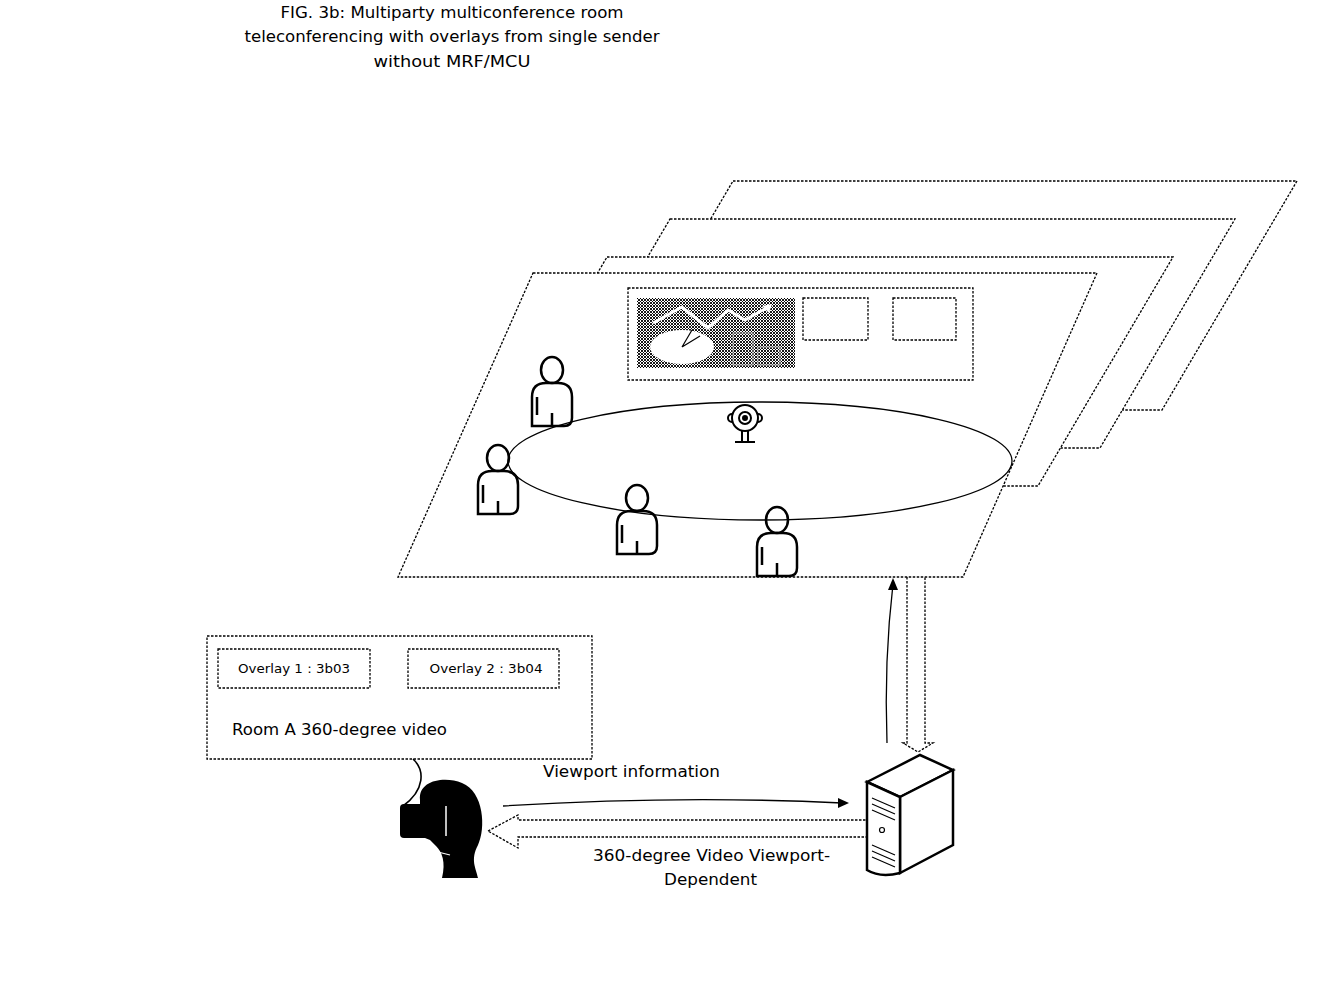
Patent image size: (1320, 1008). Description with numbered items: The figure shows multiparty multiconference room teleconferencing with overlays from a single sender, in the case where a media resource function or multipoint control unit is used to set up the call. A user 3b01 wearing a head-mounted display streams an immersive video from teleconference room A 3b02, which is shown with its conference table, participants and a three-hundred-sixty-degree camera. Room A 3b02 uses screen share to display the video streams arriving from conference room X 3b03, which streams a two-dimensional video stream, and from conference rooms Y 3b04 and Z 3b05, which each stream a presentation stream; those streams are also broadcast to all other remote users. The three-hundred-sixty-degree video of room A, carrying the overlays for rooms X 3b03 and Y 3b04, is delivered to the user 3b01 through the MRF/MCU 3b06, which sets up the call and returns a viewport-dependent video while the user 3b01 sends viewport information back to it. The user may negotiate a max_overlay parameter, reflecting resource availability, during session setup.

The user 3b01 is at (477, 865).
The teleconference room A 3b02 is at (455, 428).
The conference room X 3b03 is at (597, 265).
The conference room Y 3b04 is at (663, 220).
The conference room Z 3b05 is at (730, 192).
The MRF/MCU 3b06 is at (875, 772).